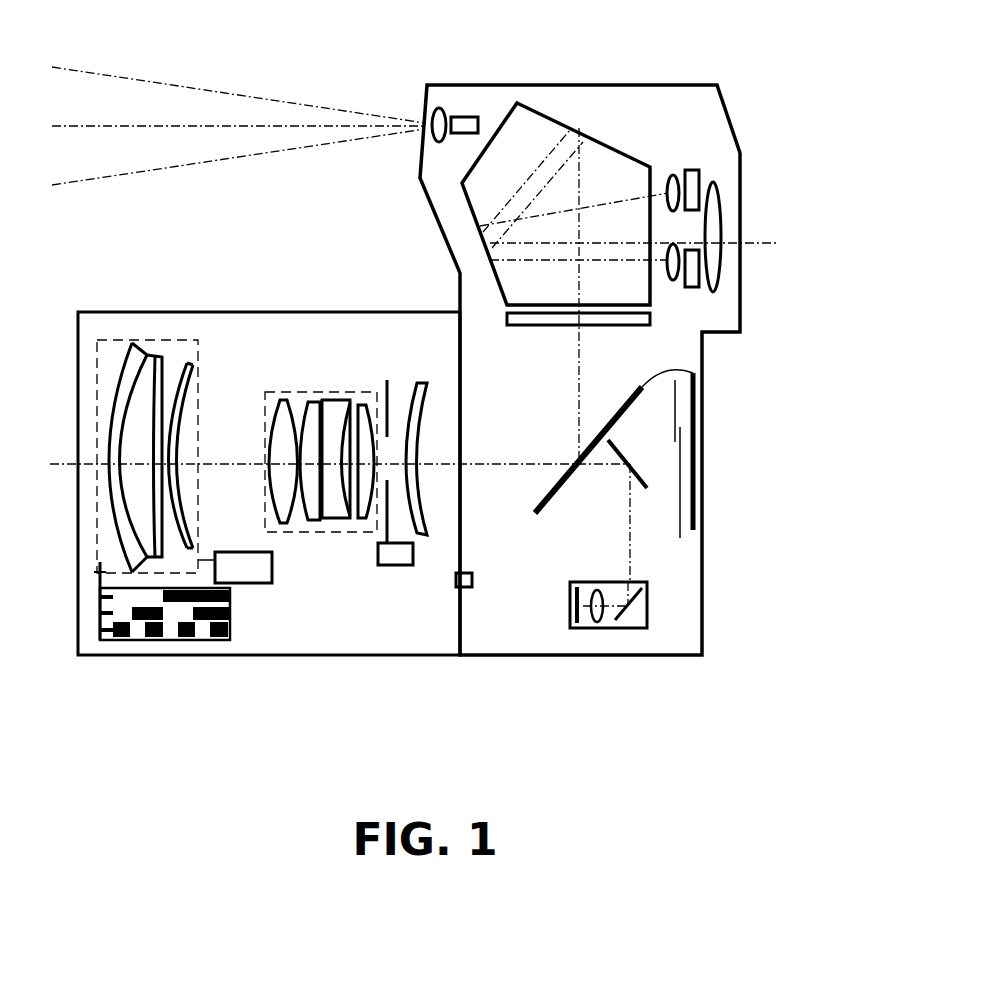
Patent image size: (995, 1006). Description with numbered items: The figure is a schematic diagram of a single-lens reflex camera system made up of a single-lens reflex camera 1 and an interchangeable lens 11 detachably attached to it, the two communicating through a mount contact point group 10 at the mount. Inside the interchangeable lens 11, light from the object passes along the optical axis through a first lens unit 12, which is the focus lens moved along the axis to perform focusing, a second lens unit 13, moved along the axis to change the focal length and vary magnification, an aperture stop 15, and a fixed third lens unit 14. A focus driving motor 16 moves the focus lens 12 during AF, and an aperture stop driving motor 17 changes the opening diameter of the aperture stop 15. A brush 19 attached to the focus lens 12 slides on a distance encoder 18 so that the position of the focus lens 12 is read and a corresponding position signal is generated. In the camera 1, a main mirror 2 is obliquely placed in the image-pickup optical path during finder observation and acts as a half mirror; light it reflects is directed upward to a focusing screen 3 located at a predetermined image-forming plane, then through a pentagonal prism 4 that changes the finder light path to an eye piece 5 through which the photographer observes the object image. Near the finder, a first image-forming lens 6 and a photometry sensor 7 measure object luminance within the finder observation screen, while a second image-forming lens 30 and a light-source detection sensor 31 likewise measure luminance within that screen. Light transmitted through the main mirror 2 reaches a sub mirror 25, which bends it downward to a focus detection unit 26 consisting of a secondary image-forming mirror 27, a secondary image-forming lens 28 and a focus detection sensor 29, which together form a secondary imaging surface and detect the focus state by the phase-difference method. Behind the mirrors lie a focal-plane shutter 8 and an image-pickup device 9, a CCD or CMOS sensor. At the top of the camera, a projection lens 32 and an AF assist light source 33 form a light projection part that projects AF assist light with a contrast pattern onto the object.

The single-lens reflex camera 1 is at (575, 370).
The main mirror 2 is at (705, 357).
The focusing screen 3 is at (655, 323).
The pentagonal prism 4 is at (527, 122).
The eye piece 5 is at (728, 203).
The first image-forming lens 6 is at (668, 175).
The photometry sensor 7 is at (690, 168).
The focal-plane shutter 8 is at (675, 542).
The image-pickup device 9 is at (695, 530).
The mount contact point group 10 is at (470, 588).
The interchangeable lens 11 is at (82, 312).
The first lens unit 12 is at (155, 340).
The second lens unit 13 is at (323, 395).
The third lens unit 14 is at (415, 383).
The aperture stop 15 is at (385, 380).
The focus driving motor 16 is at (267, 583).
The aperture stop driving motor 17 is at (383, 568).
The distance encoder 18 is at (142, 643).
The brush 19 is at (98, 573).
The sub mirror 25 is at (650, 473).
The focus detection unit 26 is at (636, 669).
The secondary image-forming mirror 27 is at (618, 630).
The secondary image-forming lens 28 is at (603, 630).
The focus detection sensor 29 is at (582, 628).
The second image-forming lens 30 is at (697, 291).
The light-source detection sensor 31 is at (673, 281).
The projection lens 32 is at (425, 122).
The AF assist light source 33 is at (458, 113).